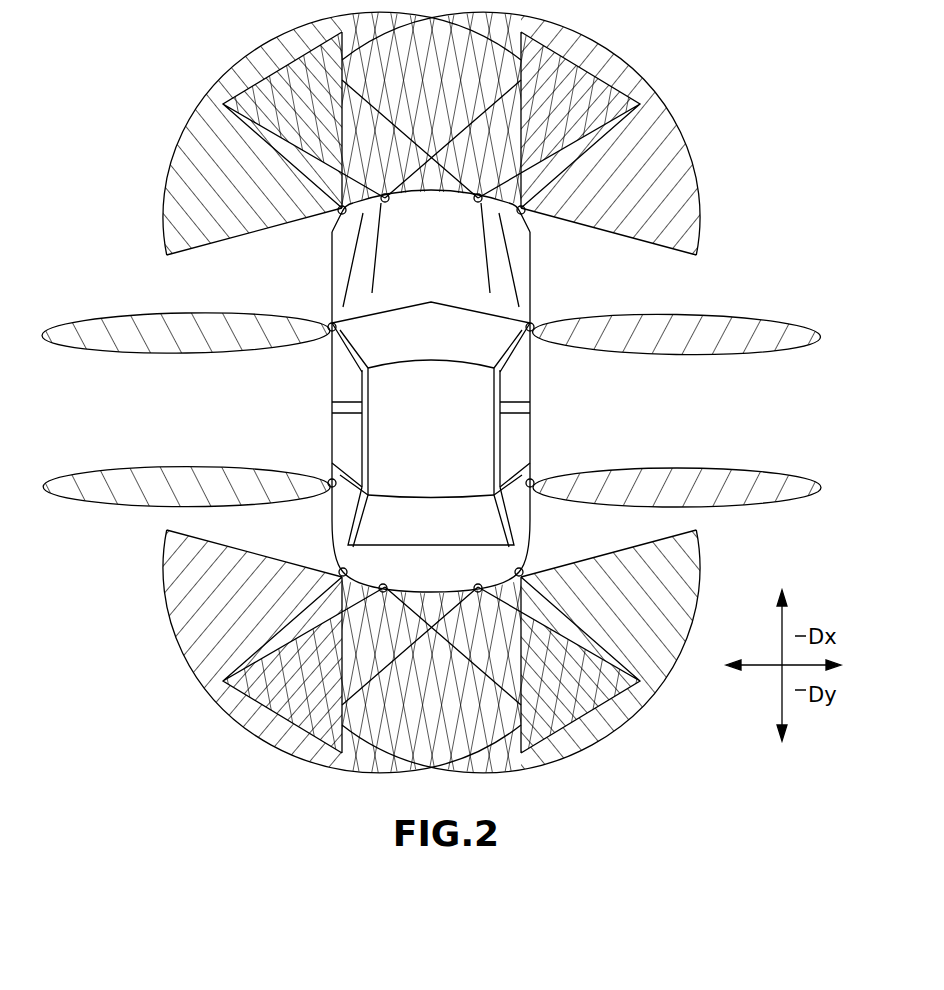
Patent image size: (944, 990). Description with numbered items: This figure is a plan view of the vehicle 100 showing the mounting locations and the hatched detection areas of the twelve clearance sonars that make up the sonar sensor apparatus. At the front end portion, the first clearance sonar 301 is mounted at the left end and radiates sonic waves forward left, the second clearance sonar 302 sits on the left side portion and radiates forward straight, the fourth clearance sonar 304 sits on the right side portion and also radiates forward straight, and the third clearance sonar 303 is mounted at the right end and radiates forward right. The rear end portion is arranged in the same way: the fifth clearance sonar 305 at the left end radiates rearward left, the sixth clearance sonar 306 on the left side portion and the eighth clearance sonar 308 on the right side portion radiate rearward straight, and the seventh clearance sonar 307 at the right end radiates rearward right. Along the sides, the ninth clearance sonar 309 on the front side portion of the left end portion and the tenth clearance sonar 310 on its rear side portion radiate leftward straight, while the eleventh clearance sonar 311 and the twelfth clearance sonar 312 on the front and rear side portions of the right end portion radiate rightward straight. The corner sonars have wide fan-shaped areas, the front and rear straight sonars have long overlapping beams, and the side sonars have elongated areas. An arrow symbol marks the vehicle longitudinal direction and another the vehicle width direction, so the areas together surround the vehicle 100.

The vehicle 100 is at (532, 409).
The first clearance sonar 301 is at (335, 221).
The second clearance sonar 302 is at (389, 204).
The third clearance sonar 303 is at (528, 221).
The fourth clearance sonar 304 is at (474, 204).
The fifth clearance sonar 305 is at (338, 565).
The sixth clearance sonar 306 is at (382, 583).
The seventh clearance sonar 307 is at (525, 565).
The eighth clearance sonar 308 is at (477, 583).
The ninth clearance sonar 309 is at (329, 337).
The tenth clearance sonar 310 is at (329, 478).
The eleventh clearance sonar 311 is at (534, 337).
The twelfth clearance sonar 312 is at (534, 478).